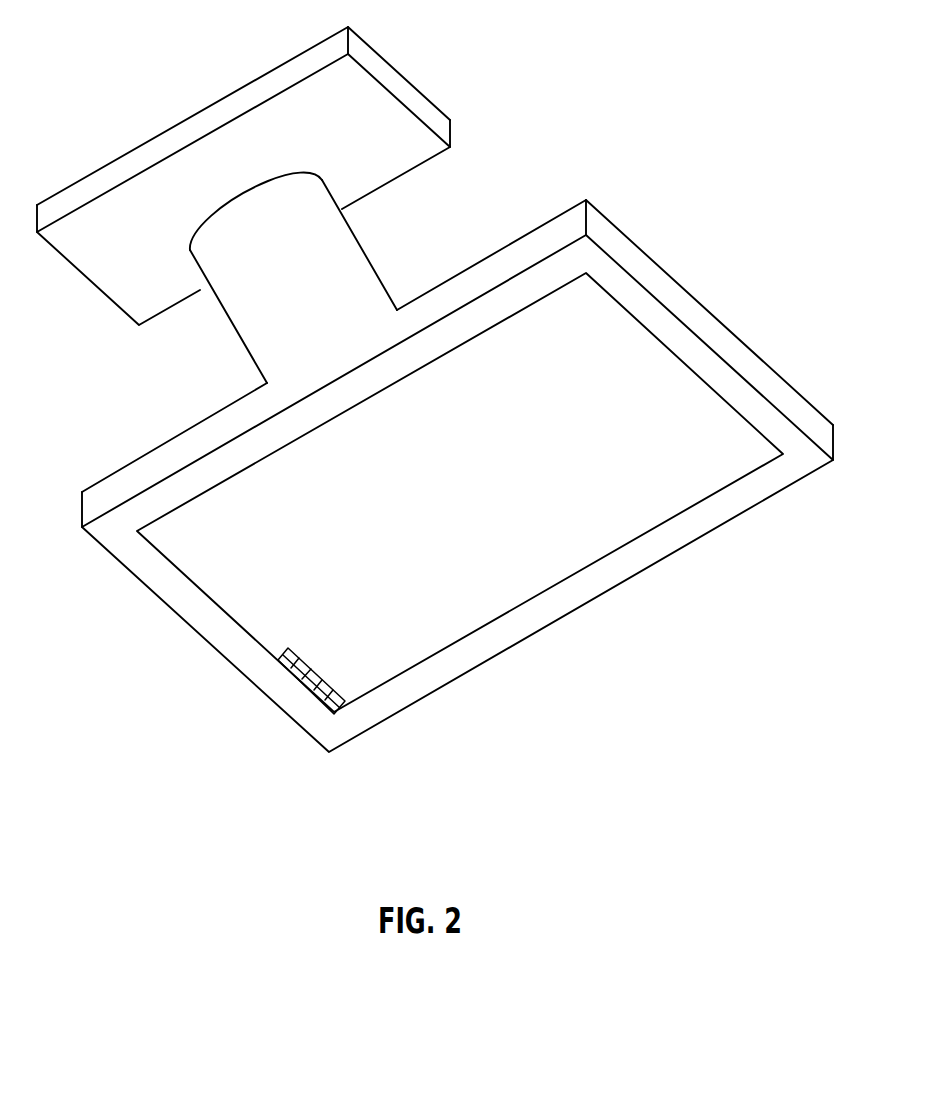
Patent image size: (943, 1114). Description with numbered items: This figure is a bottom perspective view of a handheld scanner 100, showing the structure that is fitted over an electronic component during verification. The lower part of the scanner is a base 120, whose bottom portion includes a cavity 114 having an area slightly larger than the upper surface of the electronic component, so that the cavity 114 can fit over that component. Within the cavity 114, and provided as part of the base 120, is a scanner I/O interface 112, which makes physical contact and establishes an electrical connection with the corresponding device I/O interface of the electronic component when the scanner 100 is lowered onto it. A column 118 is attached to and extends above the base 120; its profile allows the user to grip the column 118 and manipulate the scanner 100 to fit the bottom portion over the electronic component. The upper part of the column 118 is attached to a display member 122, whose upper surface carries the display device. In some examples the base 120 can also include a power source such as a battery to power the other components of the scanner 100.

The handheld scanner 100 is at (520, 153).
The scanner I/O interface 112 is at (313, 673).
The cavity 114 is at (573, 528).
The column 118 is at (250, 322).
The base 120 is at (737, 353).
The display member 122 is at (403, 90).